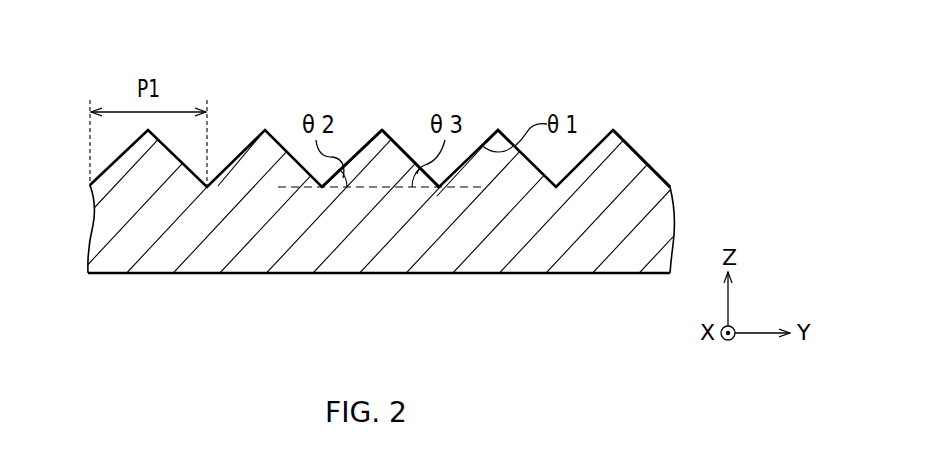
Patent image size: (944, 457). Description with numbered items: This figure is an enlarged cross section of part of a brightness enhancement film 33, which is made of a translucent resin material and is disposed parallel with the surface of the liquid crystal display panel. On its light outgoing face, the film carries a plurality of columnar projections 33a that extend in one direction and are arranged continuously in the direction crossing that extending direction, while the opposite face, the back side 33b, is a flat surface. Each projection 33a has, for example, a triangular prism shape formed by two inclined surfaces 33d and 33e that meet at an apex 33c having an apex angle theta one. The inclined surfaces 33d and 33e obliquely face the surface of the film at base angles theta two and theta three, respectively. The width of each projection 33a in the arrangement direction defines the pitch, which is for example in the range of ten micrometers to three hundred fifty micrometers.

The brightness enhancement film 33 is at (680, 51).
The columnar projections 33a is at (629, 159).
The back side 33b is at (529, 277).
The apex 33c is at (500, 129).
The inclined surface 33d is at (372, 137).
The inclined surface 33e is at (391, 137).